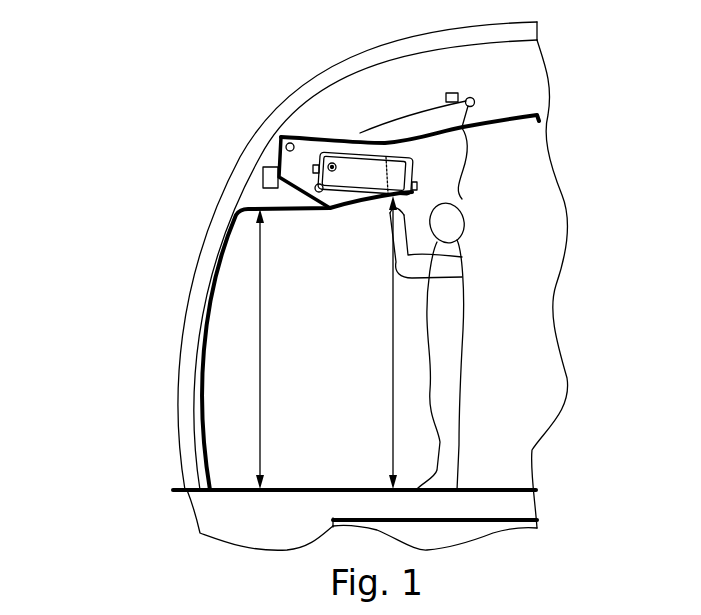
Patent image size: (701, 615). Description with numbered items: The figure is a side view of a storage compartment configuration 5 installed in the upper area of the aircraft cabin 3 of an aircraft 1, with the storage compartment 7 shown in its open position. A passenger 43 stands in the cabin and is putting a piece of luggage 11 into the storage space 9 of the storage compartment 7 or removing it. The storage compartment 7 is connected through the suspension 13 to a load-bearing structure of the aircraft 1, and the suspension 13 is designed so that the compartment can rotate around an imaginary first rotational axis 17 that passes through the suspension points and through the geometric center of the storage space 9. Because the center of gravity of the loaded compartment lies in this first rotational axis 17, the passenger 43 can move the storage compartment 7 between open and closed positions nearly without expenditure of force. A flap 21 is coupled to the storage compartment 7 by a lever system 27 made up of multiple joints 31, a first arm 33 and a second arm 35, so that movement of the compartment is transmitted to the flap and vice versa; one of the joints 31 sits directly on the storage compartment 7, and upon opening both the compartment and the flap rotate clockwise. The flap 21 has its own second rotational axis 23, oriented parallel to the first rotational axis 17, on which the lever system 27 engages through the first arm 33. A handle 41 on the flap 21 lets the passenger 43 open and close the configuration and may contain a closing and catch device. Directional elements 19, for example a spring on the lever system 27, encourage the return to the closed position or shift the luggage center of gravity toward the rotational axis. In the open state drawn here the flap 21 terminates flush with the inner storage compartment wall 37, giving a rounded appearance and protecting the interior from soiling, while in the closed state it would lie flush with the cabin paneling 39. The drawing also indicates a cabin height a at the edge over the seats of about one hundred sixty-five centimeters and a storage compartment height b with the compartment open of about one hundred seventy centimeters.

The aircraft 1 is at (116, 176).
The aircraft cabin 3 is at (555, 191).
The storage compartment configuration 5 is at (496, 161).
The storage compartment 7 is at (297, 193).
The storage space 9 is at (288, 144).
The piece of luggage 11 is at (360, 180).
The suspension 13 is at (298, 158).
The first rotational axis 17 is at (332, 163).
The directional elements 19 is at (263, 170).
The flap 21 is at (427, 124).
The second rotational axis 23 is at (472, 170).
The lever system 27 is at (356, 138).
The joints 31 is at (280, 136).
The first arm 33 is at (473, 113).
The second arm 35 is at (381, 105).
The inner storage compartment wall 37 is at (334, 134).
The cabin paneling 39 is at (293, 210).
The handle 41 is at (383, 198).
The passenger 43 is at (445, 312).
The cabin height a is at (260, 358).
The storage compartment height b is at (393, 412).